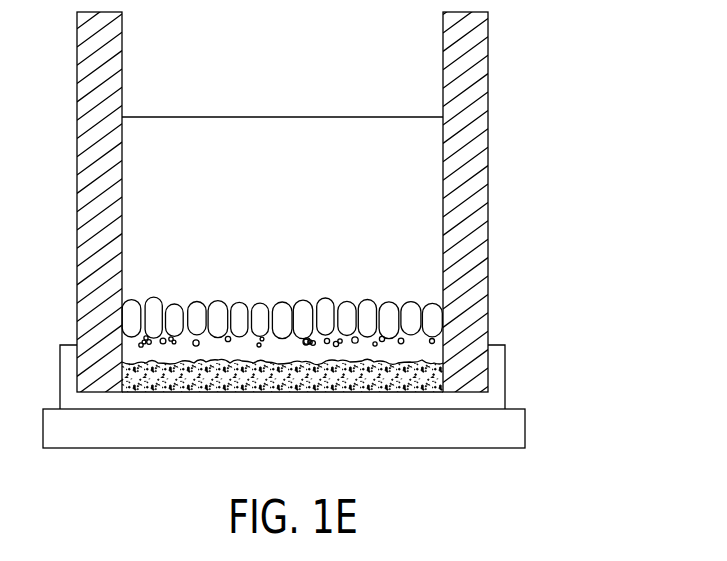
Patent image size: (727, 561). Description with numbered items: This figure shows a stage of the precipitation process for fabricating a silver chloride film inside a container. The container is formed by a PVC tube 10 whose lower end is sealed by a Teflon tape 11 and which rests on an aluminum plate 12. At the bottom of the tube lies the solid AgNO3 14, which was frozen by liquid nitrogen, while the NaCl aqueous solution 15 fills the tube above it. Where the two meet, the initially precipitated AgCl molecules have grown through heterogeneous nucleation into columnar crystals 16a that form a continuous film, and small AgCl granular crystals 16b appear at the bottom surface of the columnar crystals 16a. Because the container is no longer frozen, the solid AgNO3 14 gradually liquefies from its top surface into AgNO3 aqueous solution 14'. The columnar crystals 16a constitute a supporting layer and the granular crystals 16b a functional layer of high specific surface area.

The PVC tube 10 is at (465, 60).
The NaCl aqueous solution 15 is at (395, 213).
The columnar crystals 16a is at (433, 313).
The granular crystals 16b is at (444, 321).
The AgNO3 aqueous solution 14' is at (375, 341).
The solid AgNO3 14 is at (373, 381).
The Teflon tape 11 is at (492, 398).
The aluminum plate 12 is at (492, 428).